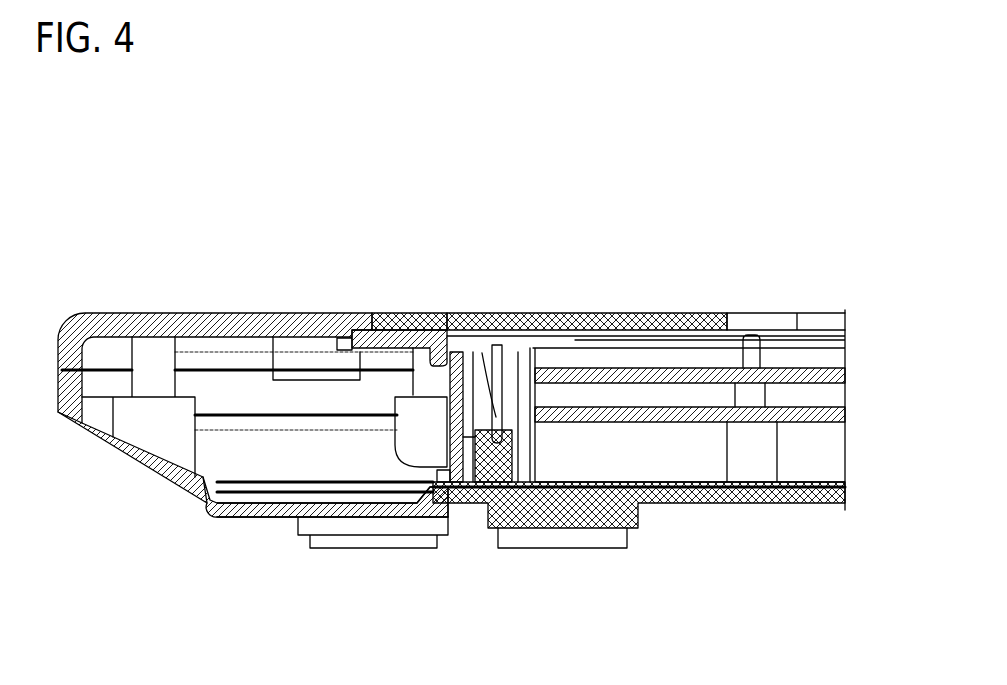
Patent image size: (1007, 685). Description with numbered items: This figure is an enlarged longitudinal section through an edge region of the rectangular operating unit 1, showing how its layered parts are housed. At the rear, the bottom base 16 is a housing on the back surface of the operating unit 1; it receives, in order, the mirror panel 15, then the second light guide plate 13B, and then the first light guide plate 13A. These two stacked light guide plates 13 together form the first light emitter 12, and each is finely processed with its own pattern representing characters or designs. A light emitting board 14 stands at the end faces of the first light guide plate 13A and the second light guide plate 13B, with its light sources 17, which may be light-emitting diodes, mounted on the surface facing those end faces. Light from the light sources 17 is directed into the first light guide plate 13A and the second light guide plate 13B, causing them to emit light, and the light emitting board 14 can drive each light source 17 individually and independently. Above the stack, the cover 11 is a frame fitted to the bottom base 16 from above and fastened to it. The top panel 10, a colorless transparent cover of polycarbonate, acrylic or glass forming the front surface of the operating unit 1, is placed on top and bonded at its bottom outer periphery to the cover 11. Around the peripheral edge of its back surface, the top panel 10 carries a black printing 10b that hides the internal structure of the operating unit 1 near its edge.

The operating unit 1 is at (776, 219).
The top panel 10 is at (428, 313).
The black printing 10b is at (548, 313).
The cover 11 is at (208, 317).
The first light emitter 12 is at (823, 266).
The light guide plates 13 is at (690, 346).
The first light guide plate 13A is at (667, 368).
The second light guide plate 13B is at (778, 407).
The light emitting board 14 is at (482, 352).
The mirror panel 15 is at (832, 485).
The bottom base 16 is at (253, 518).
The light sources 17 is at (505, 413).